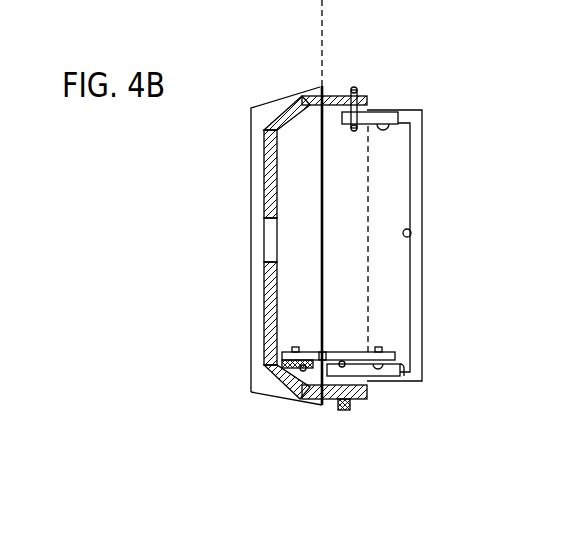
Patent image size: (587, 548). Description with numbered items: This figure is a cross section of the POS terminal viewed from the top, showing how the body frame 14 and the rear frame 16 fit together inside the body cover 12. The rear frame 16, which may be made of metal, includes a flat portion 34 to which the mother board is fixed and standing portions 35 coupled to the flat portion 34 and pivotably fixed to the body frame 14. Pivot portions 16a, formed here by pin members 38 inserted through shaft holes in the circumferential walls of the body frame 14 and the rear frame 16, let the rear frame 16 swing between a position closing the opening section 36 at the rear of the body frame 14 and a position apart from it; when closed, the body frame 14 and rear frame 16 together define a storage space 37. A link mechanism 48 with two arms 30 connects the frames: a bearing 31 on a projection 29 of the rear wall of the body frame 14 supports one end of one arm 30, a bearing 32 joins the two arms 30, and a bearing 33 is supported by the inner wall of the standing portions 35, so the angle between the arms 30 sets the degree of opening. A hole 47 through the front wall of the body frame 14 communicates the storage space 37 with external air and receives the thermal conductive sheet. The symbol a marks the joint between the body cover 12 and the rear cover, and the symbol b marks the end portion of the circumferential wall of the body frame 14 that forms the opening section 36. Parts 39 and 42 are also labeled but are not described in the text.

The body cover 12 is at (264, 107).
The body frame 14 is at (266, 210).
The rear frame 16 is at (423, 165).
The pivot portions 16a is at (364, 78).
The projection 29 is at (262, 393).
The arms 30 is at (312, 351).
The bearing 31 is at (293, 350).
The bearing 32 is at (343, 351).
The bearing 33 is at (381, 351).
The flat portion 34 is at (411, 236).
The standing portions 35 is at (393, 112).
The opening section 36 is at (367, 178).
The storage space 37 is at (292, 163).
The pin members 38 is at (347, 94).
The part 39 is at (93, 4).
The part 42 is at (201, 4).
The hole 47 is at (262, 247).
The link mechanism 48 is at (378, 292).
The joint portion a is at (322, 420).
The end portion of the circumferential wall b is at (367, 420).